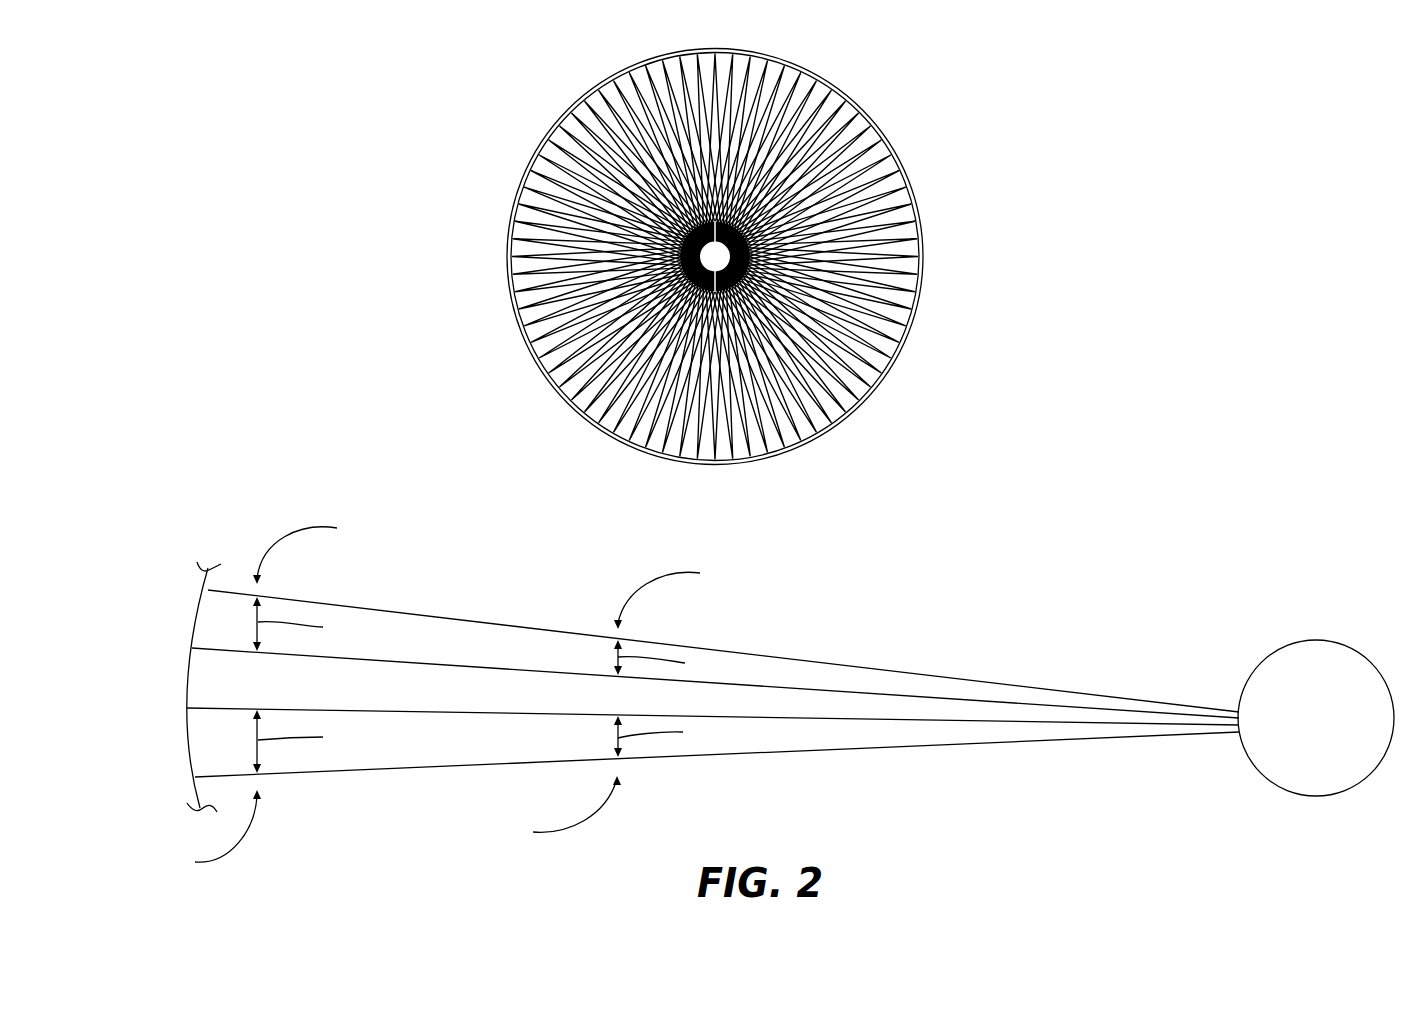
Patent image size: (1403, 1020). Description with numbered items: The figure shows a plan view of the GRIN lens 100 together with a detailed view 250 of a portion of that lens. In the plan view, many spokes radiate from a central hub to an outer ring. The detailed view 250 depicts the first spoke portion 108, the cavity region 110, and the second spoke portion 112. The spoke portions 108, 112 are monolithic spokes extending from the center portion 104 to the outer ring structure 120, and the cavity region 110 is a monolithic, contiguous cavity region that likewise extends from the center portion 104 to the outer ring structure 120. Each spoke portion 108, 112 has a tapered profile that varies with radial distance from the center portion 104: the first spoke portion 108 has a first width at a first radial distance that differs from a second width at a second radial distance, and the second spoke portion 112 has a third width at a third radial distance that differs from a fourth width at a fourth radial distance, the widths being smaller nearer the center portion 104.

The GRIN lens 100 is at (782, 257).
The center portion 104 is at (1336, 733).
The first spoke portion 108 is at (433, 753).
The cavity region 110 is at (418, 698).
The second spoke portion 112 is at (441, 653).
The outer ring structure 120 is at (199, 618).
The detailed view 250 is at (608, 698).